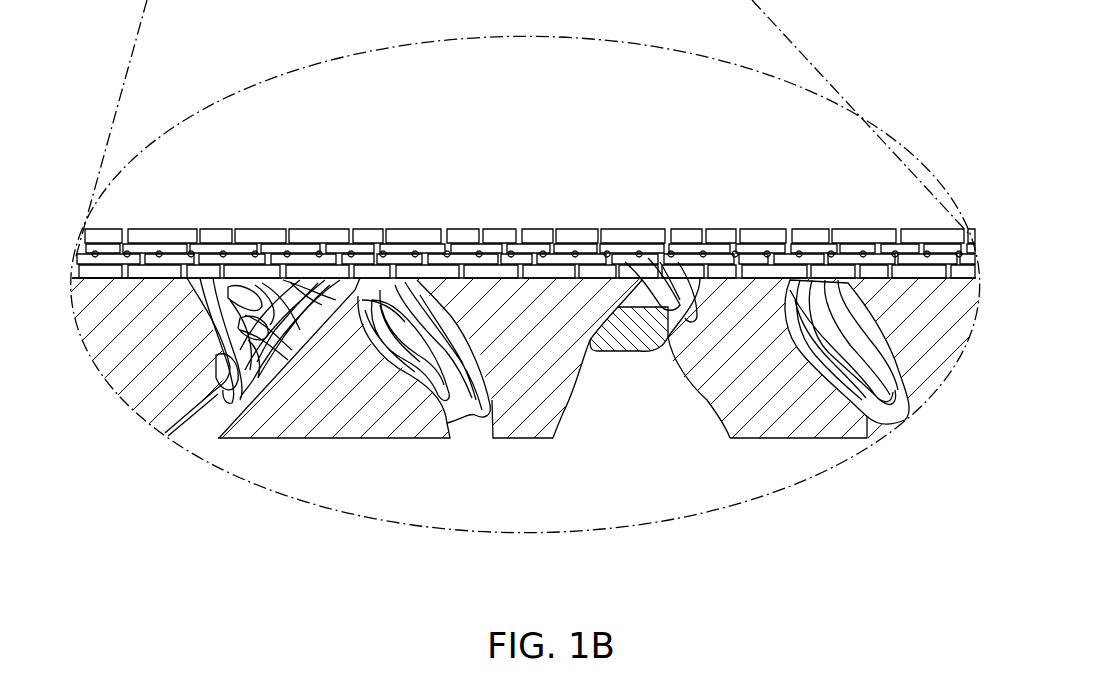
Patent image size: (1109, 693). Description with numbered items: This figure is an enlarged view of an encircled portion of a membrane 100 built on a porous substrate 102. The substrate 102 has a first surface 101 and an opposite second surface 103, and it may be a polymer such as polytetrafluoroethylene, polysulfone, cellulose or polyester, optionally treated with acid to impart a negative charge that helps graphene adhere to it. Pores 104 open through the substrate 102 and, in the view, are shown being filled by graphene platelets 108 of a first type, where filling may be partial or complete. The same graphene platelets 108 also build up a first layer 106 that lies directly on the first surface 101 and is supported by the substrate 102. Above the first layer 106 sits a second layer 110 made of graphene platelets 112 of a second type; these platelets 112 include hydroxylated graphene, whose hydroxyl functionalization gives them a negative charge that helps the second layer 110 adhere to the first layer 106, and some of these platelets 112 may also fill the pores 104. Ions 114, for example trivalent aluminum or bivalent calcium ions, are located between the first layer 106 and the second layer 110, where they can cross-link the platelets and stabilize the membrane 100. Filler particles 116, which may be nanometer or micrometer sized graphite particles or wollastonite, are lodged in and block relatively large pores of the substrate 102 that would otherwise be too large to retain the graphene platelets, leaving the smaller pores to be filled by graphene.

The membrane 100 is at (787, 160).
The first surface 101 is at (122, 230).
The substrate 102 is at (368, 417).
The second surface 103 is at (283, 438).
The pore 104 is at (577, 420).
The first layer 106 is at (490, 230).
The graphene platelets of the first type 108 is at (588, 230).
The second layer 110 is at (292, 230).
The graphene platelets of the second type 112 is at (380, 230).
The ions 114 is at (200, 230).
The filler particles 116 is at (628, 352).